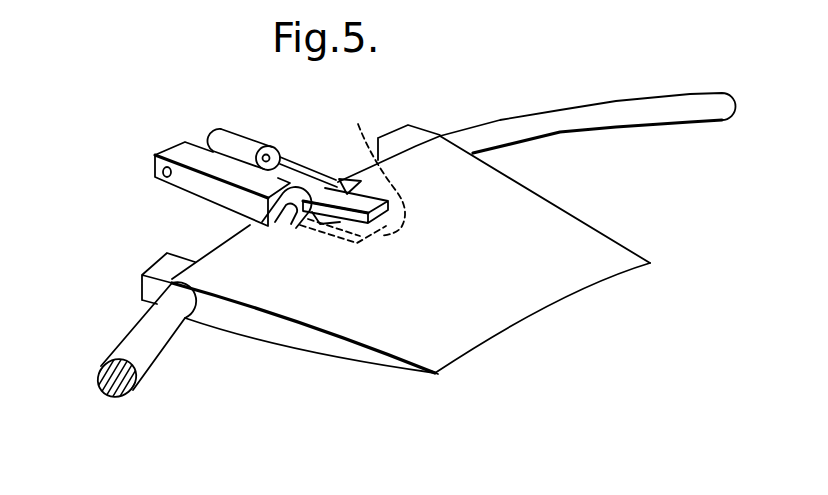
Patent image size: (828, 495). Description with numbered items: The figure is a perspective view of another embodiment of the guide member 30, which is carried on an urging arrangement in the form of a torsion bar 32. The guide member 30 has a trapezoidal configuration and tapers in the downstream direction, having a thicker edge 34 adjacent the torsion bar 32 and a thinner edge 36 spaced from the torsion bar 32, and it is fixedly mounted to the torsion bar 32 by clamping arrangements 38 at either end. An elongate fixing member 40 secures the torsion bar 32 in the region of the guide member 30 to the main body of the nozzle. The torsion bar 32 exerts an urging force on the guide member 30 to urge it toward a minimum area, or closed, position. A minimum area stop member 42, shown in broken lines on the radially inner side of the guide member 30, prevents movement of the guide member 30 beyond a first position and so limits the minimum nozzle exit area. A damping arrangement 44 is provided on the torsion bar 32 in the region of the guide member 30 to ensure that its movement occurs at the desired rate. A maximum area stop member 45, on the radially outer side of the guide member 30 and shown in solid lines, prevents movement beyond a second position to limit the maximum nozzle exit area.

The guide member 30 is at (577, 215).
The torsion bar 32 is at (113, 399).
The thicker edge 34 is at (223, 320).
The thinner edge 36 is at (436, 374).
The clamping arrangement 38 is at (138, 286).
The elongate fixing member 40 is at (207, 187).
The minimum area stop member 42 is at (352, 171).
The damping arrangement 44 is at (244, 144).
The maximum area stop member 45 is at (332, 197).